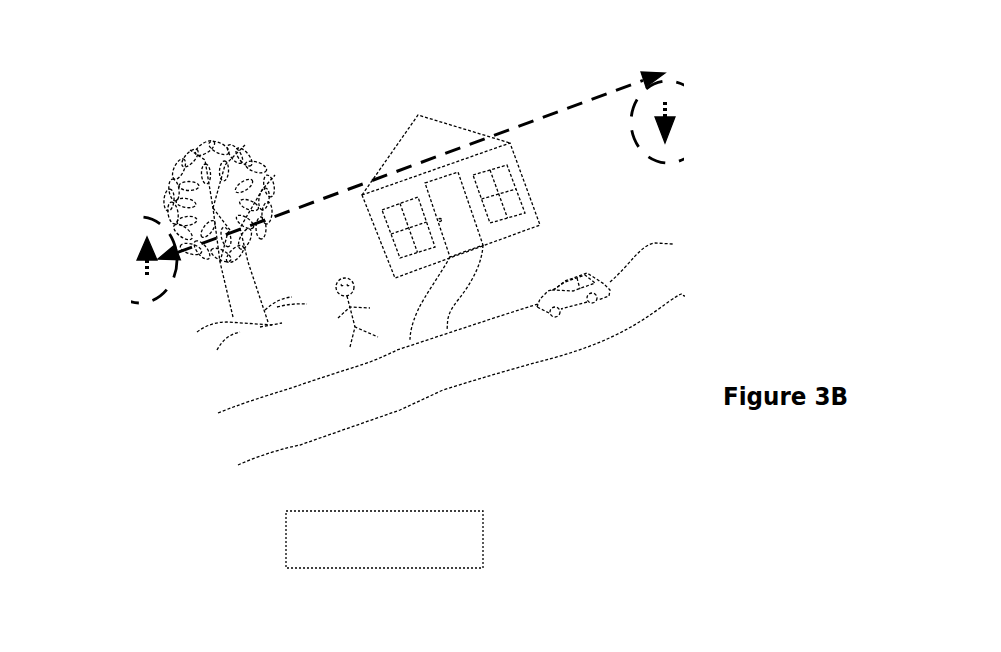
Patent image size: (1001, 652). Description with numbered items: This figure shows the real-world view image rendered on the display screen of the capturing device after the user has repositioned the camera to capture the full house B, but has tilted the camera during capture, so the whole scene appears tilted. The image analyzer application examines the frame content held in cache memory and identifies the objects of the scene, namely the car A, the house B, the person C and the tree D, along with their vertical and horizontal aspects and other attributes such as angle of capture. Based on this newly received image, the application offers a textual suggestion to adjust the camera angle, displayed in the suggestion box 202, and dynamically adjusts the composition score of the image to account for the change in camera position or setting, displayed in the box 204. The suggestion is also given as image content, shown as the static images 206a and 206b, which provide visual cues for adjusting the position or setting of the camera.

The suggestion box 202 is at (244, 558).
The box 204 is at (613, 555).
The image 206a is at (138, 235).
The image 206b is at (770, 125).
The car A is at (612, 282).
The house B is at (537, 217).
The person C is at (350, 328).
The tree D is at (252, 263).